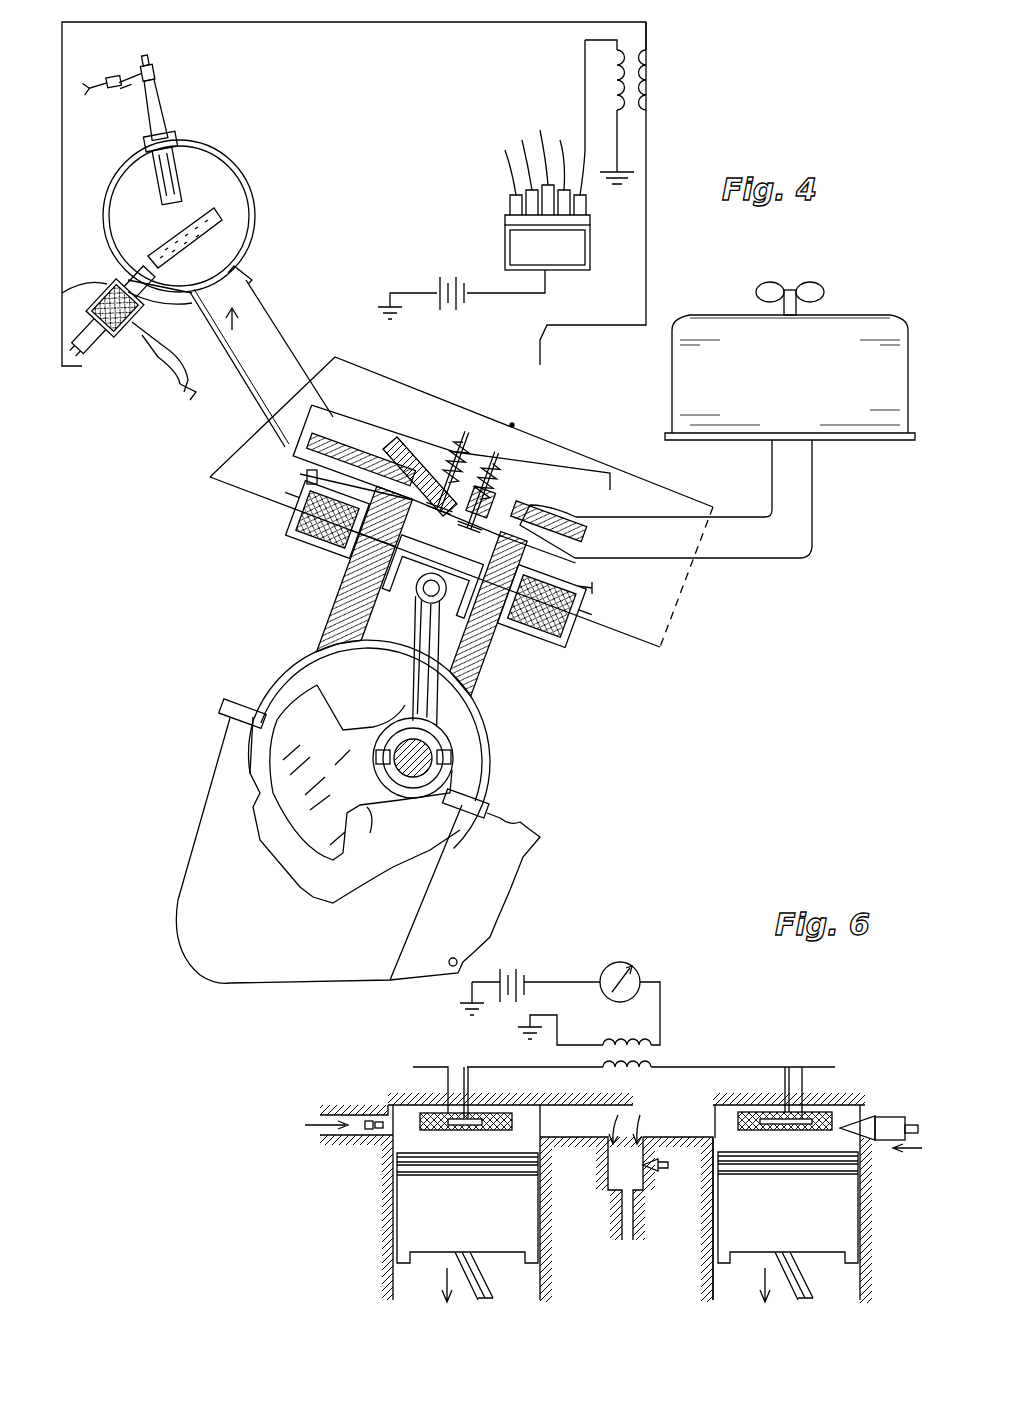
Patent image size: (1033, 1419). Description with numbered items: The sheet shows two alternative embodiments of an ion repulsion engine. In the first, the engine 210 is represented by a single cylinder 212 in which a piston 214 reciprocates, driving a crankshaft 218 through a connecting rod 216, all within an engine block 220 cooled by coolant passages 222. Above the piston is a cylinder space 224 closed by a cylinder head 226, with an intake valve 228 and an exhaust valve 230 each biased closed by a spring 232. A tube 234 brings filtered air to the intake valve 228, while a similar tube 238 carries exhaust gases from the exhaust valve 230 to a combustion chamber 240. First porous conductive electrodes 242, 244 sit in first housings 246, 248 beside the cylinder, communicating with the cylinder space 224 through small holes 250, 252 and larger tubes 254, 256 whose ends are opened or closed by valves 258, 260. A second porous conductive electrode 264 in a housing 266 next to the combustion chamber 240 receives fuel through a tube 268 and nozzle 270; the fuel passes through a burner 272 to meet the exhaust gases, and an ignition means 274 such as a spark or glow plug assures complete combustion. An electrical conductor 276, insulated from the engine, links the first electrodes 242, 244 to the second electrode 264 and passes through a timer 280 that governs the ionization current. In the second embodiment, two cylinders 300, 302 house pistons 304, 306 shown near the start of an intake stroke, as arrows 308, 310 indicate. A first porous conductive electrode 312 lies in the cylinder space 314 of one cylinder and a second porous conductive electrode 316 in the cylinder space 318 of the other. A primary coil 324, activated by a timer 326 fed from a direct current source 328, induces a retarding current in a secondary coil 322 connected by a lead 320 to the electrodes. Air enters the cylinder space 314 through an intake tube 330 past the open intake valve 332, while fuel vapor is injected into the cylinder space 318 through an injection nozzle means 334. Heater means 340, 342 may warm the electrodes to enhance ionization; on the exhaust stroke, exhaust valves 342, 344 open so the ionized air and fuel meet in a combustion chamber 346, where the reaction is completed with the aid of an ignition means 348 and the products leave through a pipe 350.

In FIG. 4, the engine 210 is at (230, 690).
In FIG. 4, the cylinder 212 is at (350, 650).
In FIG. 4, the piston 214 is at (400, 640).
In FIG. 4, the connecting rod 216 is at (383, 742).
In FIG. 4, the crankshaft 218 is at (385, 822).
In FIG. 4, the engine block 220 is at (492, 782).
In FIG. 4, the passages 222 is at (340, 603).
In FIG. 4, the cylinder space 224 is at (515, 494).
In FIG. 4, the cylinder head 226 is at (430, 440).
In FIG. 4, the intake valve 228 is at (512, 452).
In FIG. 4, the exhaust valve 230 is at (512, 425).
In FIG. 4, the spring 232 is at (455, 425).
In FIG. 4, the tube 234 is at (737, 506).
In FIG. 4, the tube 238 is at (272, 345).
In FIG. 4, the combustion chamber 240 is at (255, 224).
In FIG. 4, the first porous conductive electrode 242 is at (500, 650).
In FIG. 4, the first porous conductive electrode 244 is at (322, 556).
In FIG. 4, the first housing 246 is at (583, 636).
In FIG. 4, the first housing 248 is at (300, 528).
In FIG. 4, the small hole 250 is at (560, 512).
In FIG. 4, the small hole 252 is at (395, 455).
In FIG. 4, the tube 254 is at (570, 548).
In FIG. 4, the tube 256 is at (348, 438).
In FIG. 4, the valve 258 is at (593, 590).
In FIG. 4, the valve 260 is at (300, 474).
In FIG. 4, the second porous conductive electrode 264 is at (120, 340).
In FIG. 4, the housing 266 is at (95, 292).
In FIG. 4, the tube 268 is at (182, 392).
In FIG. 4, the nozzle 270 is at (165, 345).
In FIG. 4, the burner 272 is at (218, 208).
In FIG. 4, the ignition means 274 is at (172, 116).
In FIG. 4, the electrical conductor 276 is at (310, 24).
In FIG. 4, the timer 280 is at (505, 245).
In FIG. 6, the cylinder 300 is at (395, 1253).
In FIG. 6, the cylinder 302 is at (712, 1278).
In FIG. 6, the piston 304 is at (528, 1270).
In FIG. 6, the piston 306 is at (832, 1285).
In FIG. 6, the arrow 308 is at (440, 1284).
In FIG. 6, the arrow 310 is at (760, 1292).
In FIG. 6, the first porous conductive electrode 312 is at (418, 1112).
In FIG. 6, the cylinder space 314 is at (405, 1185).
In FIG. 6, the second porous conductive electrode 316 is at (836, 1126).
In FIG. 6, the cylinder space 318 is at (842, 1180).
In FIG. 6, the high voltage lead 320 is at (492, 1068).
In FIG. 6, the secondary coil 322 is at (624, 1072).
In FIG. 6, the primary coil 324 is at (616, 1044).
In FIG. 6, the timer 326 is at (630, 968).
In FIG. 6, the direct current source 328 is at (520, 972).
In FIG. 6, the intake tube 330 is at (325, 1112).
In FIG. 6, the intake valve 332 is at (362, 1132).
In FIG. 6, the injection nozzle means 334 is at (855, 1150).
In FIG. 6, the heater means 340 is at (492, 1120).
In FIG. 6, the heater means / exhaust valve 342 is at (555, 1140).
In FIG. 6, the exhaust valve 344 is at (698, 1117).
In FIG. 6, the combustion chamber 346 is at (604, 1180).
In FIG. 6, the ignition means 348 is at (648, 1176).
In FIG. 6, the pipe 350 is at (610, 1236).